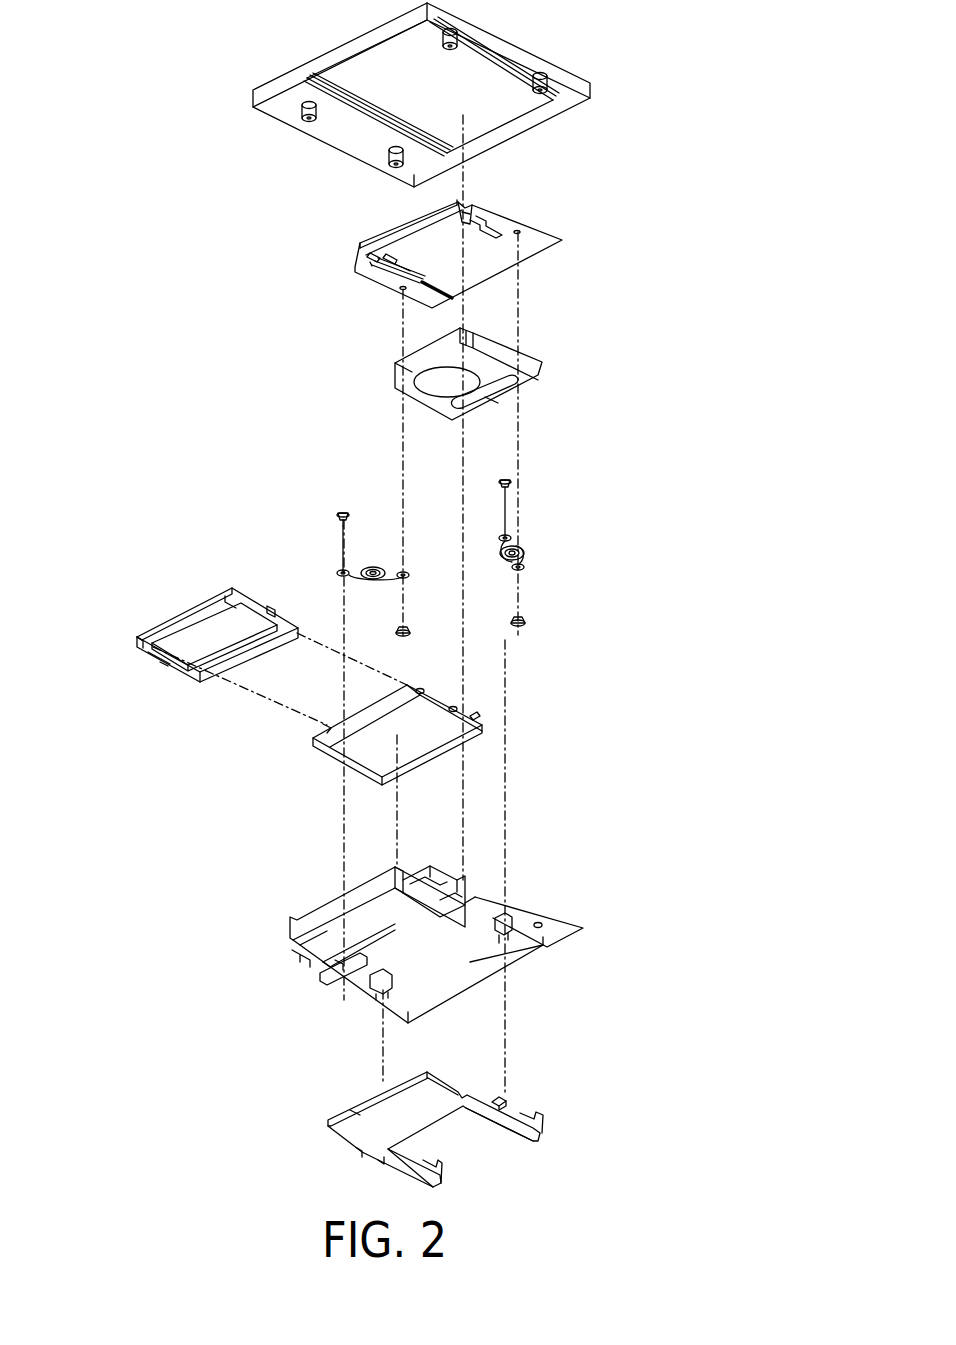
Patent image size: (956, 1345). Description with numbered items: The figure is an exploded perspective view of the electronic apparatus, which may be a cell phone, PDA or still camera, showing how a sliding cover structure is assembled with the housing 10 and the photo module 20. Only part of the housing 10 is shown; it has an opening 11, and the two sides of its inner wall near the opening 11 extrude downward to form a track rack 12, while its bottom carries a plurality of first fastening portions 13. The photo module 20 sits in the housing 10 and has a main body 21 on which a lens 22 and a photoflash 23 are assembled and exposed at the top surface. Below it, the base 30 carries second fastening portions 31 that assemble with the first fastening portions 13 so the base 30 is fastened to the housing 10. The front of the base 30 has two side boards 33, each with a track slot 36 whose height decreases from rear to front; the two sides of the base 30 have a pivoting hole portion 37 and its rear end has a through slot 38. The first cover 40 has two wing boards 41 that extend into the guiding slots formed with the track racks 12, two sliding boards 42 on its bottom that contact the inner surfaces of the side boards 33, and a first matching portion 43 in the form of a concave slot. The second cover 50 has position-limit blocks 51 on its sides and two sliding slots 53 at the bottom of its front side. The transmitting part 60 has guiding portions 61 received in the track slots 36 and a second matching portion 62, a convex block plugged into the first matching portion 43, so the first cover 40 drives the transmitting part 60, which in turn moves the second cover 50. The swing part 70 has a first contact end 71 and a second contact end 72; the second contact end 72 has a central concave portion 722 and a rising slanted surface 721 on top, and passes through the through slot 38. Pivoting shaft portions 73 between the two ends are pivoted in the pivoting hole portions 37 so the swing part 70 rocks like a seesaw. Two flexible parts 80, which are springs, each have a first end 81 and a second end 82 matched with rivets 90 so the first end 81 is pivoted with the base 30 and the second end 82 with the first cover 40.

The housing 10 is at (277, 137).
The opening 11 is at (393, 90).
The track rack 12 is at (482, 72).
The first fastening portion 13 is at (542, 93).
The photo module 20 is at (377, 373).
The main body 21 is at (517, 377).
The lens 22 is at (440, 387).
The photoflash 23 is at (485, 397).
The base 30 is at (290, 887).
The second fastening portion 31 is at (543, 927).
The side board 33 is at (398, 875).
The track slot 36 is at (418, 880).
The pivoting hole portion 37 is at (515, 927).
The through slot 38 is at (540, 950).
The first cover 40 is at (557, 258).
The wing board 41 is at (533, 242).
The sliding board 42 is at (373, 260).
The first matching portion 43 is at (383, 270).
The second cover 50 is at (170, 595).
The position-limit block 51 is at (270, 608).
The sliding slot 53 is at (137, 635).
The transmitting part 60 is at (317, 765).
The guiding portion 61 is at (452, 708).
The second matching portion 62 is at (473, 713).
The swing part 70 is at (305, 1103).
The first contact end 71 is at (353, 1108).
The second contact end 72 is at (542, 1125).
The pivoting shaft portion 73 is at (500, 1100).
The slanted surface 721 is at (530, 1113).
The concave portion 722 is at (472, 1150).
The flexible part 80 is at (530, 547).
The first end 81 is at (508, 538).
The second end 82 is at (520, 567).
The rivet 90 is at (530, 622).